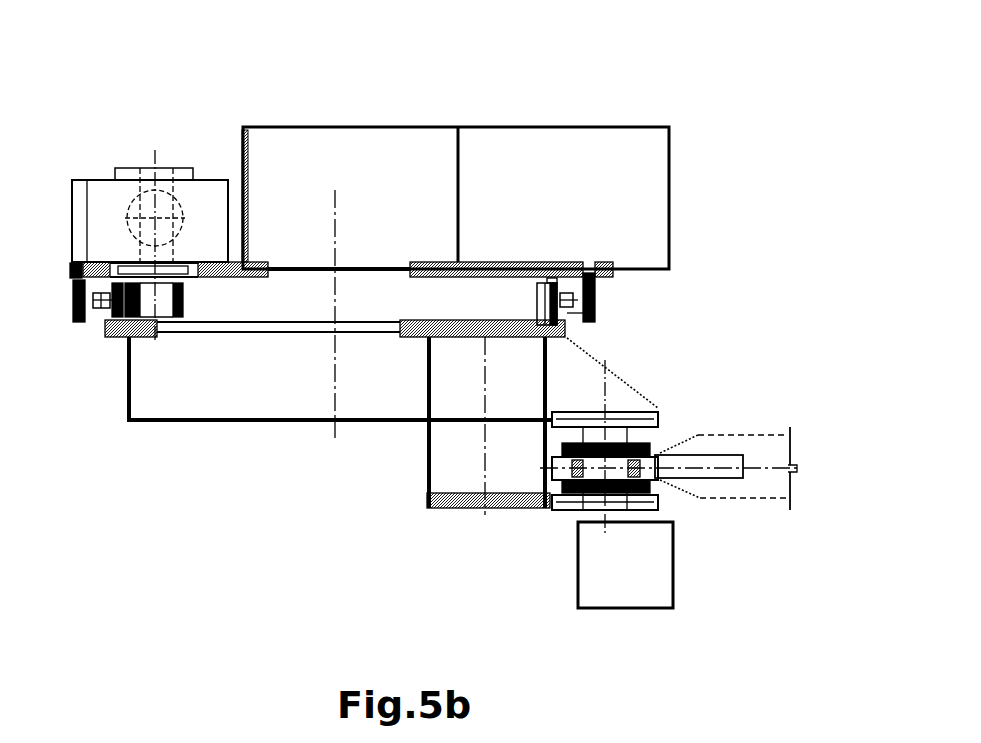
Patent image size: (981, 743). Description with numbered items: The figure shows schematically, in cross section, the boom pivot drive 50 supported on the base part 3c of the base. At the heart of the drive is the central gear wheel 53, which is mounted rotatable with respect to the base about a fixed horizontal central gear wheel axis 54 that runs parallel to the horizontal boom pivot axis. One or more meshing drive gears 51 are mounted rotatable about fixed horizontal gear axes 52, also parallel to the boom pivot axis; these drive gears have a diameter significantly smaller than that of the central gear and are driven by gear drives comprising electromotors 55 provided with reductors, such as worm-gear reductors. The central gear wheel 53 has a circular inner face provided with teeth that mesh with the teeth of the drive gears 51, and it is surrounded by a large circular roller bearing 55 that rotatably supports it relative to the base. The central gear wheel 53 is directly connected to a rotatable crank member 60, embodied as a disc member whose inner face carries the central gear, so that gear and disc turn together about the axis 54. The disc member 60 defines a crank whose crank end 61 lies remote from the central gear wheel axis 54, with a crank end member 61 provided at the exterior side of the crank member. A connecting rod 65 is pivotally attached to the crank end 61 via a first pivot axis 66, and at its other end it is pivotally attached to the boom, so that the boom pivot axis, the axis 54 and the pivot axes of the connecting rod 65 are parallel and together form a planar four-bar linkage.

The base part 3c is at (609, 157).
The drive assembly 50 is at (143, 553).
The meshing drive gear 51 is at (163, 298).
The horizontal gear axis 52 is at (155, 158).
The central gear wheel 53 is at (527, 290).
The central gear wheel axis 54 is at (337, 393).
The electromotor 55 is at (208, 197).
The rotatable crank member 60 is at (390, 435).
The crank end member 61 is at (627, 398).
The connecting rod 65 is at (755, 448).
The first pivot axis 66 is at (605, 498).